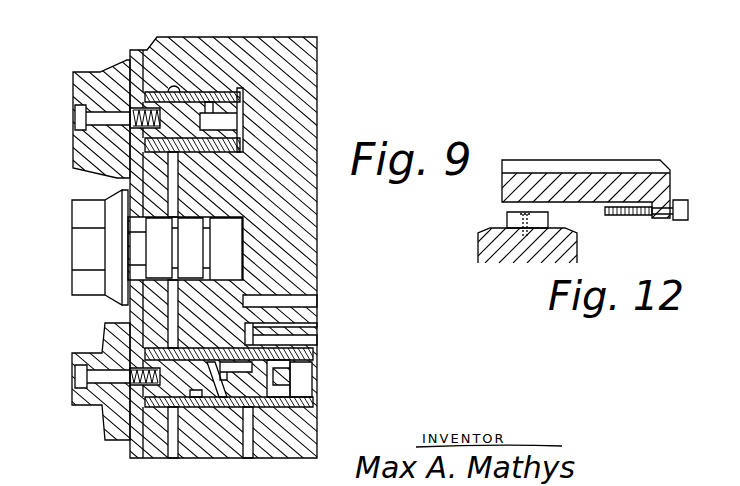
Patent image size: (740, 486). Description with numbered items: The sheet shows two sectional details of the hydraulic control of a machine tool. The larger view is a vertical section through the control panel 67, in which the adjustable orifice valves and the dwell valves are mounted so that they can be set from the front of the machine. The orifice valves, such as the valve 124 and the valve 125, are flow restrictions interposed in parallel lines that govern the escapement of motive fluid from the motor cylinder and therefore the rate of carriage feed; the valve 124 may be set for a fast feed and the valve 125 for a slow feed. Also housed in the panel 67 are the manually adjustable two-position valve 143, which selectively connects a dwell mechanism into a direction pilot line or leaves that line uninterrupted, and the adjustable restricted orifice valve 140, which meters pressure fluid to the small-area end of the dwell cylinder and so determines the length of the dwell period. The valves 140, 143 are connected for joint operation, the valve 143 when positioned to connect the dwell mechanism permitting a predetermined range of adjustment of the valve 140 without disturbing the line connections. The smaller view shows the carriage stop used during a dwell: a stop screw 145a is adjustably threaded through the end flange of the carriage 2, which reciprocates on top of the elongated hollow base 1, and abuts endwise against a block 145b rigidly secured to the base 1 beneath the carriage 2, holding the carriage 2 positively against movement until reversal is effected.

In FIG. 9, the control panel 67 is at (322, 100).
In FIG. 9, the orifice valve 124 is at (113, 57).
In FIG. 9, the orifice valve 125 is at (65, 229).
In FIG. 9, the two-position valve 143 is at (197, 398).
In FIG. 9, the orifice valve 140 is at (280, 405).
In FIG. 12, the base 1 is at (480, 246).
In FIG. 12, the carriage 2 is at (594, 168).
In FIG. 12, the stop screw 145a is at (632, 216).
In FIG. 12, the block 145b is at (507, 219).